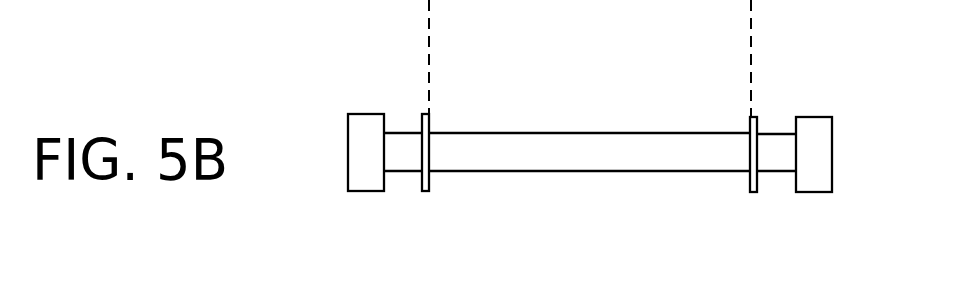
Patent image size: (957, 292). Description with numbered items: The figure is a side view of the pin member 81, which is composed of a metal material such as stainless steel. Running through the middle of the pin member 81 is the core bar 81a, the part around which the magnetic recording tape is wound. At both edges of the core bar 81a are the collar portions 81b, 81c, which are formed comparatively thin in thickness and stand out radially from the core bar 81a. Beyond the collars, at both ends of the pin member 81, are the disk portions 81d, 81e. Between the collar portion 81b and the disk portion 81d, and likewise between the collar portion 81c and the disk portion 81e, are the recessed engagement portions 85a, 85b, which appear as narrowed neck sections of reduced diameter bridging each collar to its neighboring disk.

The pin member 81 is at (824, 120).
The core bar 81a is at (745, 177).
The collar portion 81b is at (426, 192).
The collar portion 81c is at (750, 192).
The disk portion 81d is at (363, 191).
The disk portion 81e is at (813, 192).
The recessed engagement portion 85a is at (403, 132).
The recessed engagement portion 85b is at (770, 132).